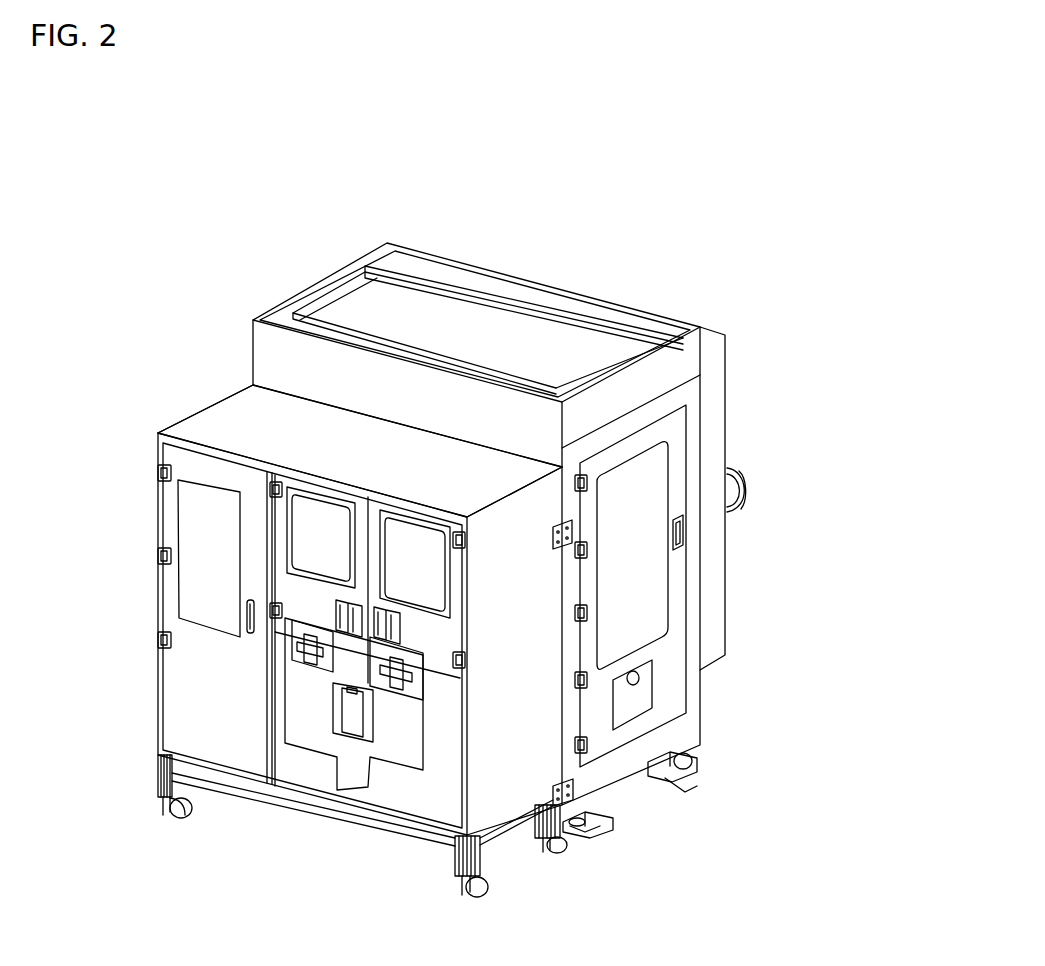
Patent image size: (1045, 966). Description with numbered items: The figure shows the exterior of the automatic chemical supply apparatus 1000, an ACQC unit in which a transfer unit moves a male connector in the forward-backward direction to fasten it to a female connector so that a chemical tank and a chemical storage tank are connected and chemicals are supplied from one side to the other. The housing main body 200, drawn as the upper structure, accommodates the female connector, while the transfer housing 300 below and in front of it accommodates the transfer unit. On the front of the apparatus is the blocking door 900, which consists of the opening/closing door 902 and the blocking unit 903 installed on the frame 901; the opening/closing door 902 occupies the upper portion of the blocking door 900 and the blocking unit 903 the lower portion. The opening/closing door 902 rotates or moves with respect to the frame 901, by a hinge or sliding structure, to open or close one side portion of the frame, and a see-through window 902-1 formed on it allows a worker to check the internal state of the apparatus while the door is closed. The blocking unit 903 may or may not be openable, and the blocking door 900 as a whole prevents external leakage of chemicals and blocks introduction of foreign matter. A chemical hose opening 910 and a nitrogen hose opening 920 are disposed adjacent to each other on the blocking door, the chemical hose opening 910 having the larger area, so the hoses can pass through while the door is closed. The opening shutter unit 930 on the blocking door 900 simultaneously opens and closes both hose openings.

The automatic chemical supply apparatus 1000 is at (180, 185).
The housing main body 200 is at (388, 303).
The transfer housing 300 is at (247, 420).
The blocking door 900 is at (878, 522).
The frame 901 is at (272, 533).
The opening/closing door 902 is at (428, 630).
The see-through window 902-1 is at (423, 568).
The blocking unit 903 is at (440, 725).
The chemical hose opening 910 is at (400, 673).
The nitrogen hose opening 920 is at (303, 657).
The opening shutter unit 930 is at (350, 750).